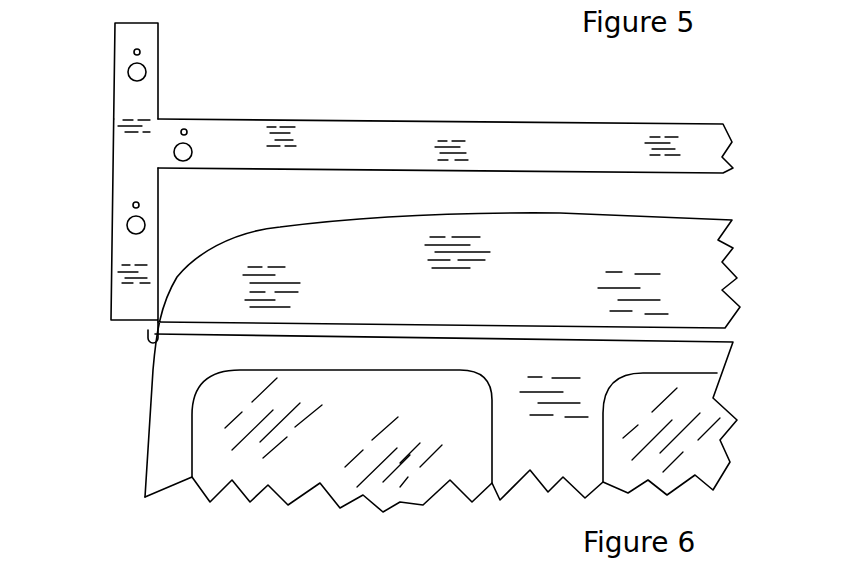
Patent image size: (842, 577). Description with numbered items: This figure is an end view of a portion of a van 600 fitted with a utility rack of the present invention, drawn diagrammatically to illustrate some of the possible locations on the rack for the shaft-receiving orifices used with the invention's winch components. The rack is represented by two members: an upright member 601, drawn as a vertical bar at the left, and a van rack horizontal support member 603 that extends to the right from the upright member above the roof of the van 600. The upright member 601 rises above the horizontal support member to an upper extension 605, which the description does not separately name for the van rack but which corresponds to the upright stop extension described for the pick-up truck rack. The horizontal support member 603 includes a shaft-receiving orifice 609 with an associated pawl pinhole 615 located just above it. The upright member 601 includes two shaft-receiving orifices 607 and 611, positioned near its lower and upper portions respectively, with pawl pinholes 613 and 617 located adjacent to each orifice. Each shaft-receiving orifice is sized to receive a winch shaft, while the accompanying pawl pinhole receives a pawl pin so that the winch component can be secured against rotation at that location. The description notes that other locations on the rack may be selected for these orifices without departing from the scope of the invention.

The van 600 is at (685, 263).
The upright member 601 is at (125, 172).
The van rack horizontal support member 603 is at (350, 143).
The upper bracket portion 605 is at (128, 43).
The shaft-receiving orifice 607 is at (128, 225).
The shaft-receiving orifice 609 is at (173, 150).
The shaft-receiving orifice 611 is at (128, 70).
The pawl pinhole 613 is at (128, 207).
The pawl pinhole 615 is at (192, 131).
The pawl pinhole 617 is at (143, 51).